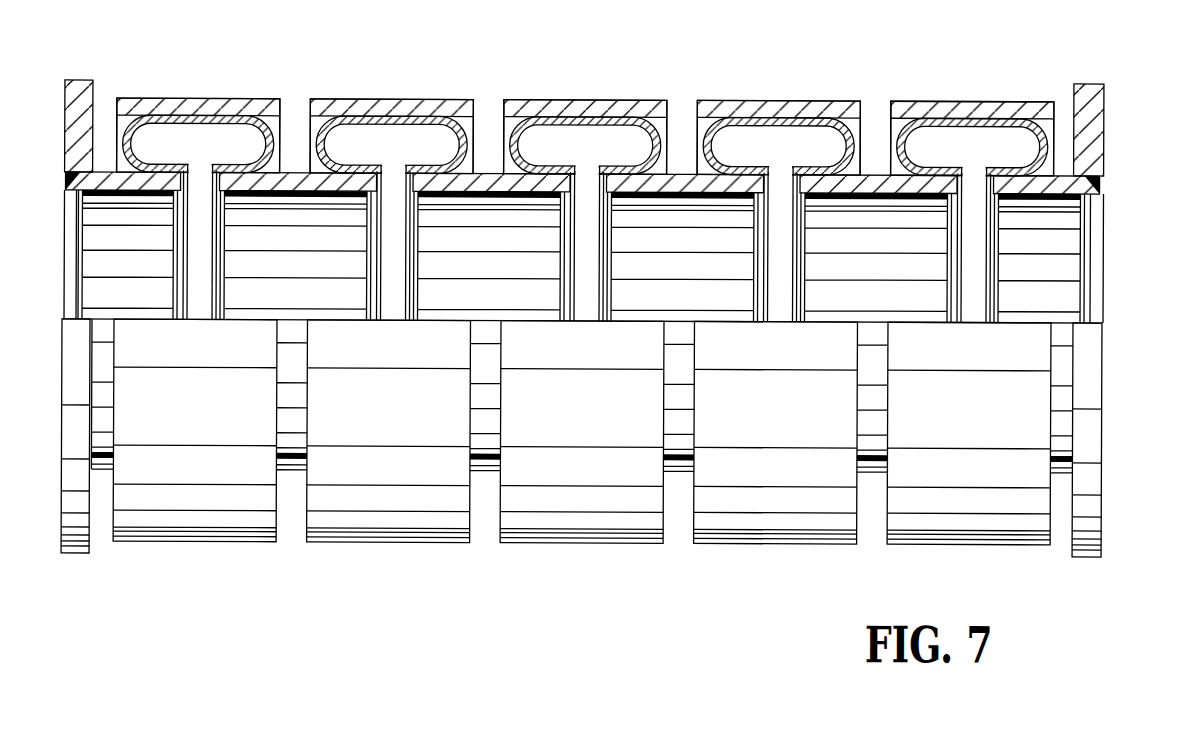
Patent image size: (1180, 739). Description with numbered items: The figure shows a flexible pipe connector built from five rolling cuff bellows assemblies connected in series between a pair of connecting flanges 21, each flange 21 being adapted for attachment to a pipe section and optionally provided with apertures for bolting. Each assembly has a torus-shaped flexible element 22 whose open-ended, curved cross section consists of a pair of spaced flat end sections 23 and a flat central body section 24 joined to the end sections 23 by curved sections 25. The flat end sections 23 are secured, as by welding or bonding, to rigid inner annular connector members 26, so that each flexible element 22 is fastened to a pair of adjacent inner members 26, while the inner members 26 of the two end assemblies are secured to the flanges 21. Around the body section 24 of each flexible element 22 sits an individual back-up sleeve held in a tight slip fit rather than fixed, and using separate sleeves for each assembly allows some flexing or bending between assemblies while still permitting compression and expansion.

The connecting flange 21 is at (76, 81).
The flexible element 22 is at (286, 124).
The flat end section 23 is at (213, 159).
The flat body section 24 is at (220, 125).
The curved section 25 is at (136, 129).
The inner connector member 26 is at (143, 185).